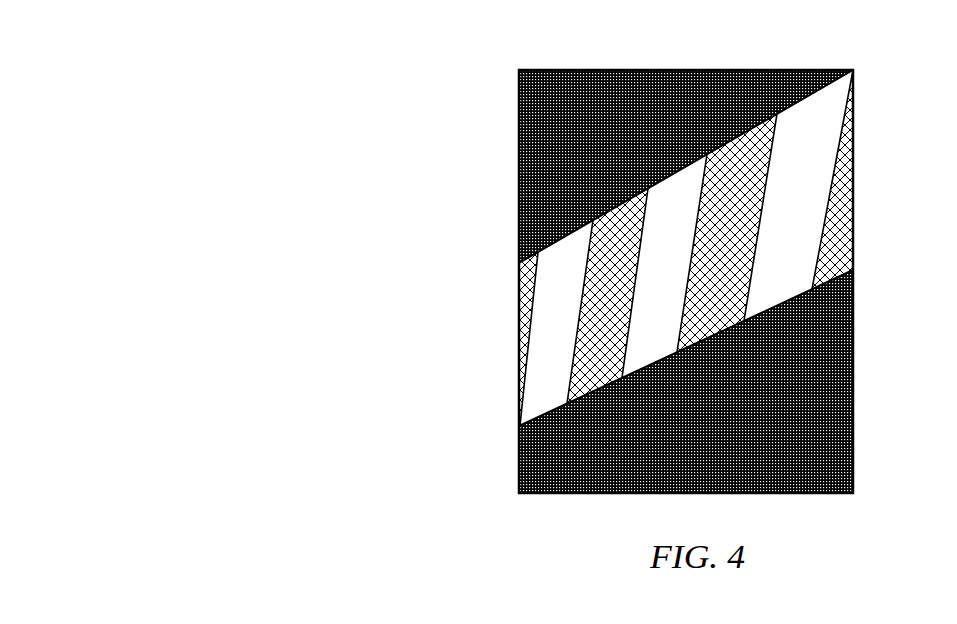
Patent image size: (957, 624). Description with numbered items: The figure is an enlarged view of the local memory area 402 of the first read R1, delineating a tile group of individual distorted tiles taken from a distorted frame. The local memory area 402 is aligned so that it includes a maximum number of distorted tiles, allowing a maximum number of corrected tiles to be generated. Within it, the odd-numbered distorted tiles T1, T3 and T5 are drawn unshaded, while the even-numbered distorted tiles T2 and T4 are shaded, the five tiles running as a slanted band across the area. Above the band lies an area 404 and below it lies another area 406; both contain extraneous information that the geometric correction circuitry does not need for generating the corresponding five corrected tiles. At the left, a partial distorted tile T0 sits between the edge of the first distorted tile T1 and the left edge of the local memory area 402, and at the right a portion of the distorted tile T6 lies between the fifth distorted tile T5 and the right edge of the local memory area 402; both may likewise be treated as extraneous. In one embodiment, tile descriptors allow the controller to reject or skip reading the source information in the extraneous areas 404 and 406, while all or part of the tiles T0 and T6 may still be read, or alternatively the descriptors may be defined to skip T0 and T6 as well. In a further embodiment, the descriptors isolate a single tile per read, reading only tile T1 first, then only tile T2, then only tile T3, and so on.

The local memory area 402 is at (672, 281).
The area above the distorted tiles 404 is at (588, 147).
The area below the distorted tiles 406 is at (703, 408).
The first read R1 is at (686, 47).
The partial distorted tile T0 is at (520, 281).
The first distorted tile T1 is at (556, 322).
The second distorted tile T2 is at (607, 296).
The third distorted tile T3 is at (664, 266).
The fourth distorted tile T4 is at (727, 233).
The fifth distorted tile T5 is at (798, 195).
The distorted tile portion T6 is at (847, 222).